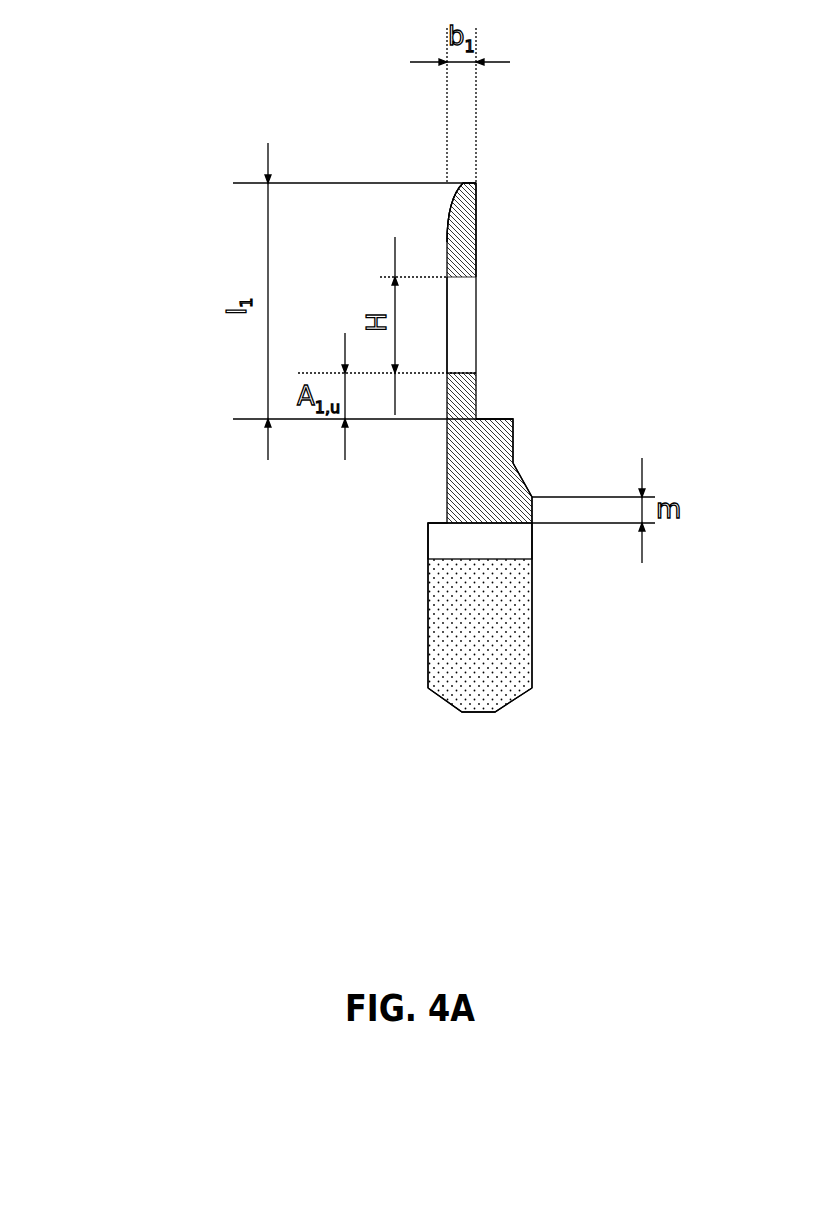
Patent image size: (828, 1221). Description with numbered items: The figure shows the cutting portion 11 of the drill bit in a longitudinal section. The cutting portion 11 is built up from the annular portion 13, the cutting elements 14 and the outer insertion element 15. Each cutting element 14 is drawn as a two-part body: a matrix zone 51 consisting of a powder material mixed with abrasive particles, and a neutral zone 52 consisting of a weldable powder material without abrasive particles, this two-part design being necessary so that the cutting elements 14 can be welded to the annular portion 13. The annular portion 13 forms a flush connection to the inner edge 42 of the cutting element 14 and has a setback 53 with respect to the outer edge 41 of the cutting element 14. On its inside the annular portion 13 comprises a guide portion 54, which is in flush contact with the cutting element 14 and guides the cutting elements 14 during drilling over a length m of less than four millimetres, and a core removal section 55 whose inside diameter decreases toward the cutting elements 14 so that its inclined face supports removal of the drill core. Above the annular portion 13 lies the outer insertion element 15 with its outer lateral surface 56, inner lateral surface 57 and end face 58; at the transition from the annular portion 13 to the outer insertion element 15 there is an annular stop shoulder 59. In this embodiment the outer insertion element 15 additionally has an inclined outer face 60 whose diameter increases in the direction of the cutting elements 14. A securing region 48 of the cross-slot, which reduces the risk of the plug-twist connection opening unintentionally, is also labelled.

The cutting portion 11 is at (168, 415).
The annular portion 13 is at (462, 450).
The cutting elements 14 is at (476, 736).
The outer insertion element 15 is at (462, 250).
The outer edge 41 is at (427, 625).
The inner edge 42 is at (535, 628).
The securing region 48 is at (477, 298).
The matrix zone 51 is at (496, 641).
The neutral zone 52 is at (445, 552).
The setback 53 is at (430, 518).
The guide portion 54 is at (534, 510).
The core removal section 55 is at (524, 470).
The outer lateral surface 56 is at (445, 268).
The inner lateral surface 57 is at (478, 205).
The end face 58 is at (470, 180).
The annular stop shoulder 59 is at (500, 415).
The inclined outer face 60 is at (445, 198).